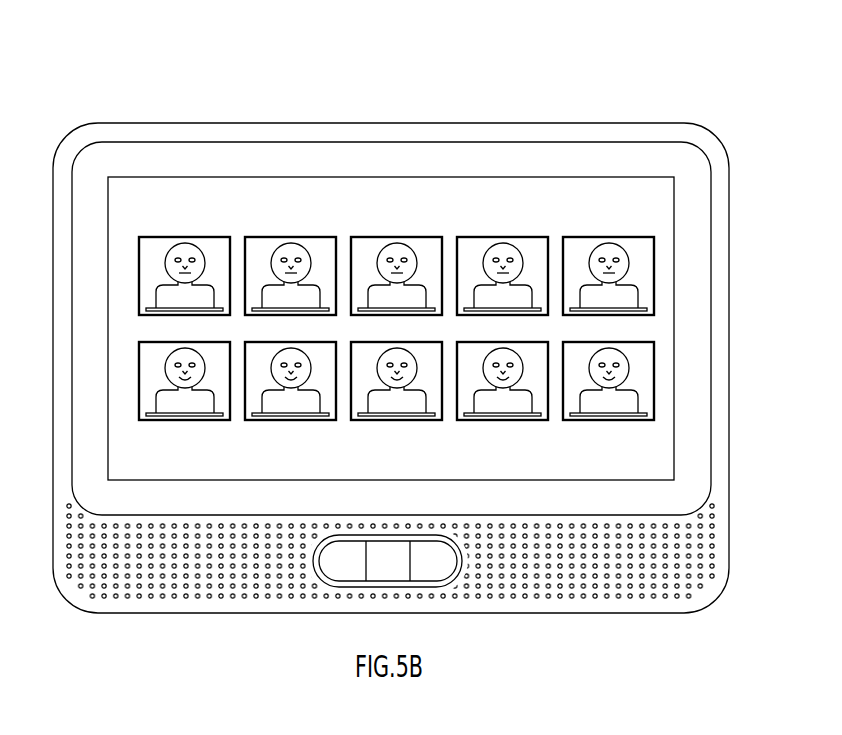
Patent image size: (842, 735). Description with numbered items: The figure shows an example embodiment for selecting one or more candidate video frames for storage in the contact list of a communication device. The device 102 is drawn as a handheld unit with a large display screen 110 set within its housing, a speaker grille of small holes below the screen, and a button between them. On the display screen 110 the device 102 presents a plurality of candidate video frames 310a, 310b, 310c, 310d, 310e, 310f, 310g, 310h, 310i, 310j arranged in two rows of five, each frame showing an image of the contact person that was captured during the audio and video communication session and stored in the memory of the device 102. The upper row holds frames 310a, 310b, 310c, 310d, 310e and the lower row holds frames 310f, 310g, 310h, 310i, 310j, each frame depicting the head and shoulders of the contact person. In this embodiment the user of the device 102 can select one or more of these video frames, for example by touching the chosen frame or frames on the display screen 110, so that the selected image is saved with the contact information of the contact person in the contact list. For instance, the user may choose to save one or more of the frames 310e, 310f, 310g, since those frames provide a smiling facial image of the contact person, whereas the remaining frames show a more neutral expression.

The device 102 is at (687, 106).
The display screen 110 is at (133, 197).
The candidate video frame 310a is at (169, 237).
The candidate video frame 310b is at (274, 237).
The candidate video frame 310c is at (378, 237).
The candidate video frame 310d is at (484, 237).
The candidate video frame 310e is at (586, 237).
The candidate video frame 310f is at (212, 421).
The candidate video frame 310g is at (316, 421).
The candidate video frame 310h is at (420, 421).
The candidate video frame 310i is at (526, 421).
The candidate video frame 310j is at (631, 421).